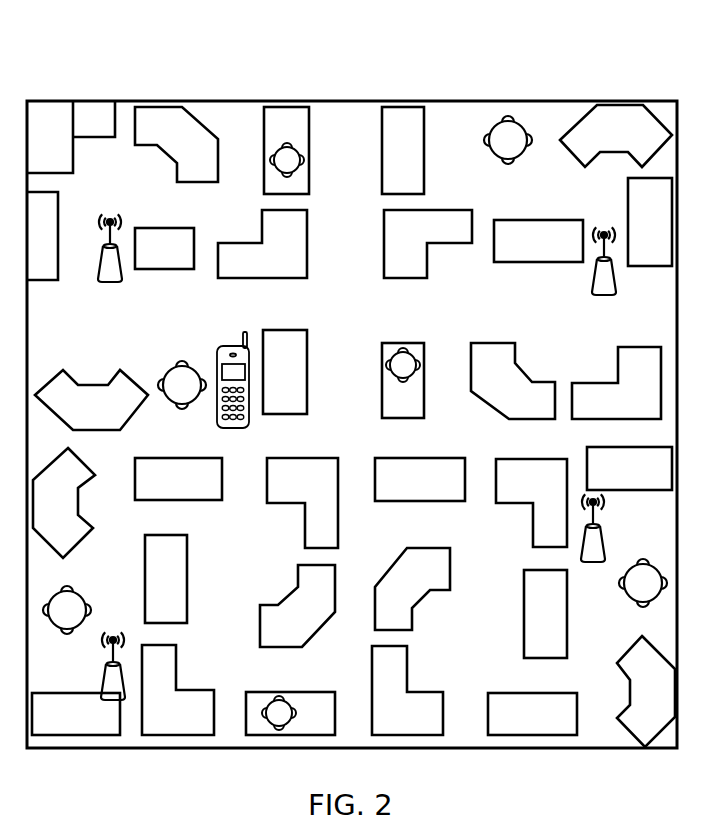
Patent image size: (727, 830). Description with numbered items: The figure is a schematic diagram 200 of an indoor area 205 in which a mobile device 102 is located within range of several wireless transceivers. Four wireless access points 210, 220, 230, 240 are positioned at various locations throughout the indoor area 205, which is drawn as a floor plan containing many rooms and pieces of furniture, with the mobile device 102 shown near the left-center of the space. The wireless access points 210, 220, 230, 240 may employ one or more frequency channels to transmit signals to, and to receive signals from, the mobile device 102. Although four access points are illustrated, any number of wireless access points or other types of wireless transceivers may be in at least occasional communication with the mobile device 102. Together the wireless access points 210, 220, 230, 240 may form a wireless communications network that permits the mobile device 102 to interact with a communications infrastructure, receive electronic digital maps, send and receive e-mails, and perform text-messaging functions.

The schematic diagram 200 is at (112, 68).
The indoor area 205 is at (455, 100).
The mobile device 102 is at (232, 345).
The wireless access point 210 is at (110, 285).
The wireless access point 220 is at (604, 298).
The wireless access point 230 is at (605, 528).
The wireless access point 240 is at (104, 674).